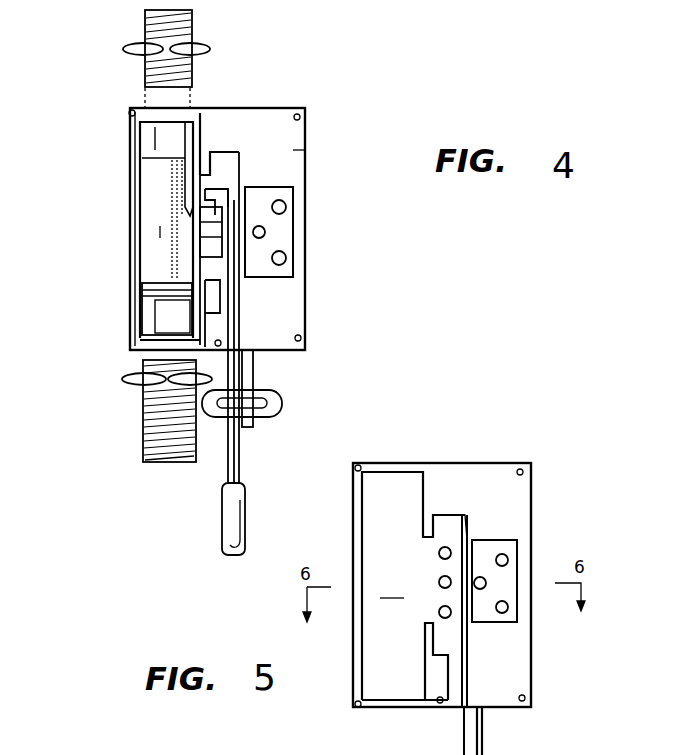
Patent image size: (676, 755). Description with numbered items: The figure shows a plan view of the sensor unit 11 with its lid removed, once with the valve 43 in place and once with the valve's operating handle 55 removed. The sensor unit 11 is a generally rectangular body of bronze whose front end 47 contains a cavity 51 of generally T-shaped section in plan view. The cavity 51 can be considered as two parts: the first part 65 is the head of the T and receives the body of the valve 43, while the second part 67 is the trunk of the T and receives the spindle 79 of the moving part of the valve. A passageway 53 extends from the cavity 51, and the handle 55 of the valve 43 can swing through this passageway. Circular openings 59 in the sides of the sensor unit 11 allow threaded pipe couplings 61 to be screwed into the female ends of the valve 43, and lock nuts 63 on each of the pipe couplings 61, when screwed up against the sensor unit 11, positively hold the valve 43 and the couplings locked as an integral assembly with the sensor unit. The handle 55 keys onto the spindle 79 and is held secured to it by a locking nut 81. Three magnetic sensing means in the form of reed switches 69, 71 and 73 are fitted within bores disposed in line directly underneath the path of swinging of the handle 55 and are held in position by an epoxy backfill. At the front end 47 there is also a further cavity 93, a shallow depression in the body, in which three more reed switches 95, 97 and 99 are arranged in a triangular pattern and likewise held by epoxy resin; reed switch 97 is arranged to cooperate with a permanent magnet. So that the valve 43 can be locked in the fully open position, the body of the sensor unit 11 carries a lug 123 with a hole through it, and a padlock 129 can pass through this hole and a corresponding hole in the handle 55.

In FIG. 4, the sensor unit 11 is at (262, 118).
In FIG. 5, the sensor unit 11 is at (442, 585).
In FIG. 4, the valve 43 is at (160, 232).
In FIG. 4, the front end 47 is at (238, 190).
In FIG. 5, the front end 47 is at (513, 507).
In FIG. 4, the cavity 51 is at (134, 143).
In FIG. 5, the cavity 51 is at (377, 527).
In FIG. 4, the passageway 53 is at (238, 331).
In FIG. 5, the passageway 53 is at (462, 708).
In FIG. 4, the handle 55 is at (234, 462).
In FIG. 4, the circular openings 59 is at (158, 108).
In FIG. 4, the threaded pipe couplings 61 is at (148, 456).
In FIG. 4, the lock nuts 63 is at (213, 44).
In FIG. 4, the first part 65 is at (155, 256).
In FIG. 4, the second part 67 is at (225, 170).
In FIG. 5, the second part 67 is at (447, 528).
In FIG. 5, the reed switch 69 is at (438, 553).
In FIG. 5, the reed switch 71 is at (438, 582).
In FIG. 5, the reed switch 73 is at (438, 613).
In FIG. 4, the spindle 79 is at (215, 237).
In FIG. 4, the locking nut 81 is at (290, 157).
In FIG. 4, the further cavity 93 is at (287, 195).
In FIG. 5, the further cavity 93 is at (490, 537).
In FIG. 4, the reed switch 95 is at (286, 207).
In FIG. 5, the reed switch 95 is at (508, 558).
In FIG. 4, the reed switch 97 is at (265, 233).
In FIG. 5, the reed switch 97 is at (486, 583).
In FIG. 4, the reed switch 99 is at (286, 258).
In FIG. 5, the reed switch 99 is at (509, 607).
In FIG. 4, the lug 123 is at (250, 375).
In FIG. 5, the lug 123 is at (472, 733).
In FIG. 4, the padlock 129 is at (283, 402).